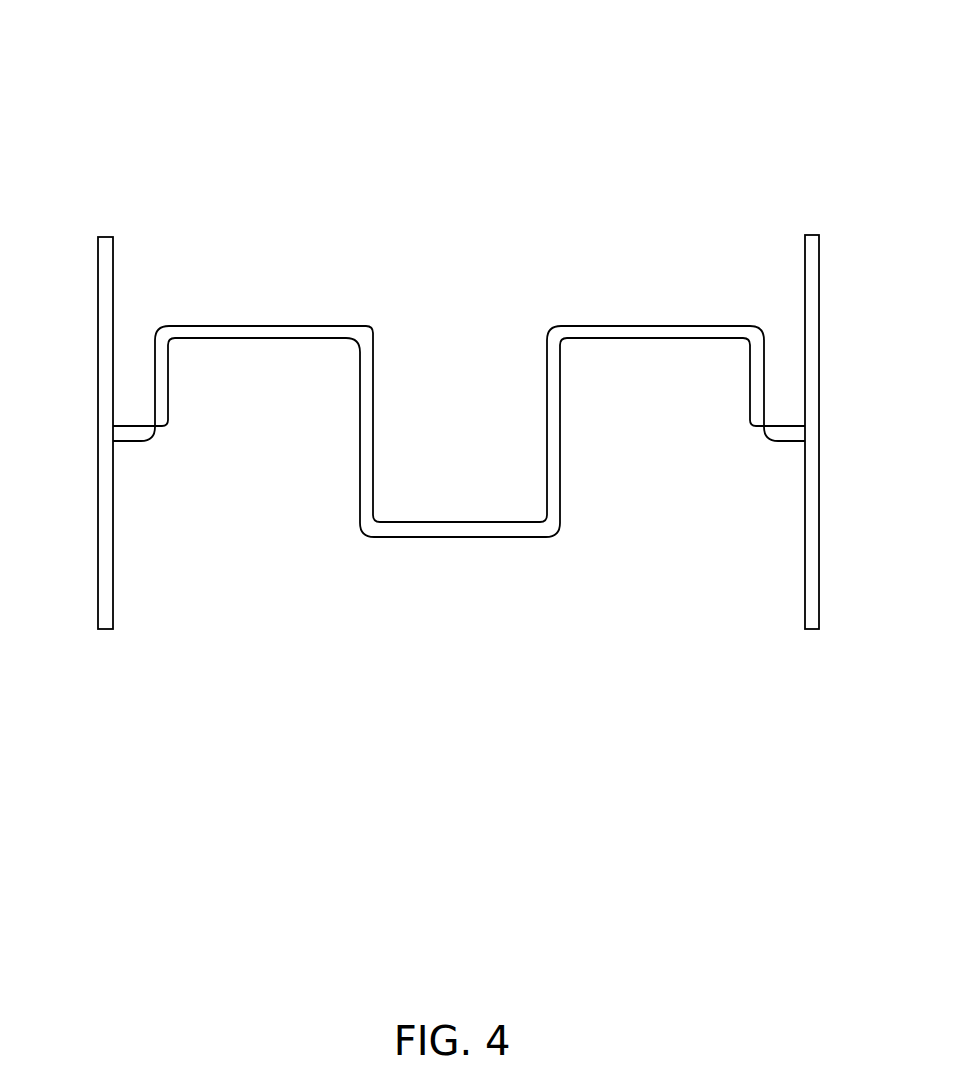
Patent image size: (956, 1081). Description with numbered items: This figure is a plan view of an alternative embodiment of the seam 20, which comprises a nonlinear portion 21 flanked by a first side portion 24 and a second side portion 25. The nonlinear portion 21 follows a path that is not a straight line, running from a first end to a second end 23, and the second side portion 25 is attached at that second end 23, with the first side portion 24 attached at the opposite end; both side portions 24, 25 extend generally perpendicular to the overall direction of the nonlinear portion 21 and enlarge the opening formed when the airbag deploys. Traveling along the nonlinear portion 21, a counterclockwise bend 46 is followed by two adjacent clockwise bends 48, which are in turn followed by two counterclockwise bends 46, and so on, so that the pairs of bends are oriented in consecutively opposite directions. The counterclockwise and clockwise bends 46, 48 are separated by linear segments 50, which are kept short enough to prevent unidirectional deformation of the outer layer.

The seam 20 is at (300, 85).
The nonlinear portion 21 is at (475, 226).
The second end 23 is at (673, 495).
The first side portion 24 is at (107, 288).
The second side portion 25 is at (810, 252).
The counterclockwise bend 46 is at (162, 433).
The clockwise bend 48 is at (157, 328).
The linear segment 50 is at (290, 332).